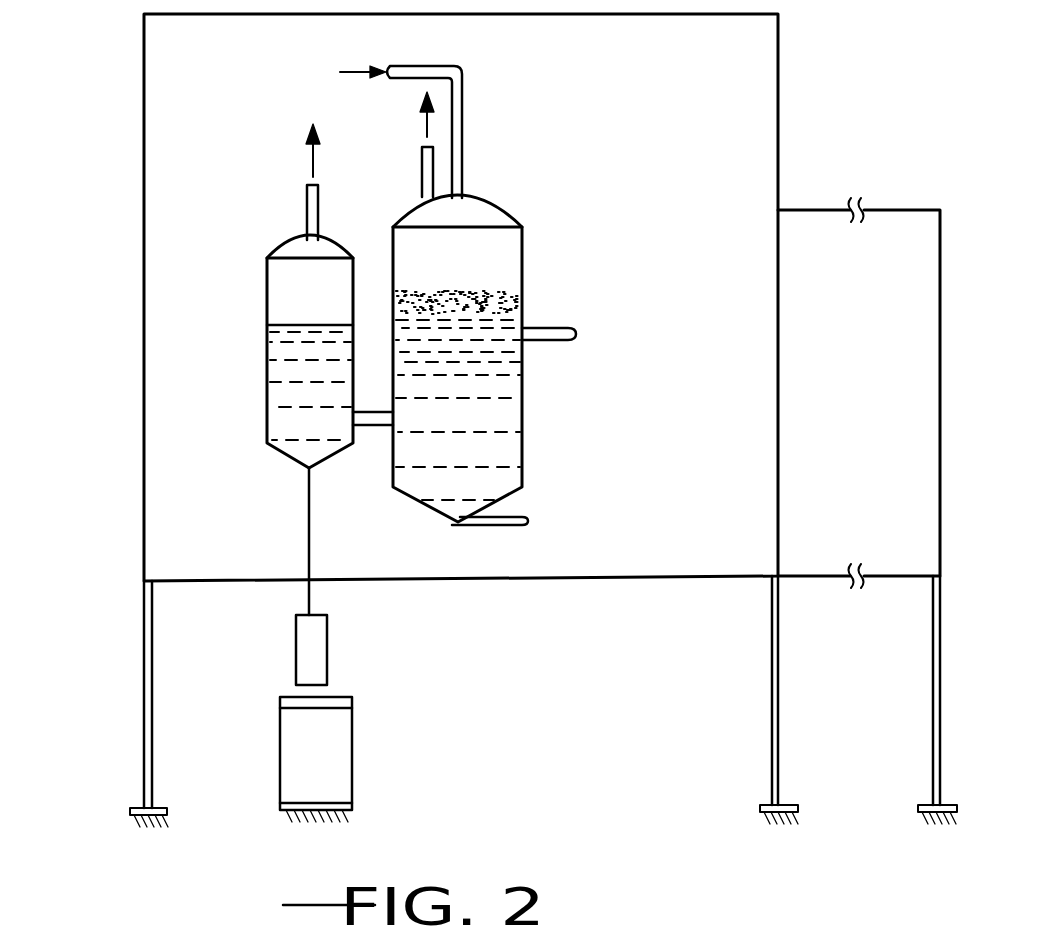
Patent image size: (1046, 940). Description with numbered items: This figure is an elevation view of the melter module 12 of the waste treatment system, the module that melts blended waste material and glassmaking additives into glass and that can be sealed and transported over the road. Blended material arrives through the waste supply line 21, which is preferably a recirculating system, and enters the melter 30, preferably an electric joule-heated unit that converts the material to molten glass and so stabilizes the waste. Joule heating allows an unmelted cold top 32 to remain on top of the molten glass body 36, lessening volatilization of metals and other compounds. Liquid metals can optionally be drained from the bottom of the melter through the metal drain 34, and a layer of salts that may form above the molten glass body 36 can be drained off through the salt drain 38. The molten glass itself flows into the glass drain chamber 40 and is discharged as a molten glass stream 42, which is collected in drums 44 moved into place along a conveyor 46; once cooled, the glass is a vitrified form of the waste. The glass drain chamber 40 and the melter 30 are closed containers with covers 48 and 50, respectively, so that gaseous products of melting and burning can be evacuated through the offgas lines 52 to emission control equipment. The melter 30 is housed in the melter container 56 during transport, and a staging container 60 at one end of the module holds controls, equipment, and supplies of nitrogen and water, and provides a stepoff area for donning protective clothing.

The melter module 12 is at (130, 617).
The waste supply line 21 is at (465, 75).
The melter 30 is at (535, 250).
The cold top 32 is at (505, 300).
The metal drain 34 is at (503, 524).
The molten glass body 36 is at (488, 360).
The salt drain 38 is at (552, 326).
The glass drain chamber 40 is at (254, 318).
The molten glass stream 42 is at (313, 546).
The drums 44 is at (329, 648).
The conveyor 46 is at (353, 742).
The cover 48 is at (287, 240).
The cover 50 is at (494, 198).
The offgas lines 52 is at (421, 175).
The melter container 56 is at (135, 180).
The staging container 60 is at (822, 210).